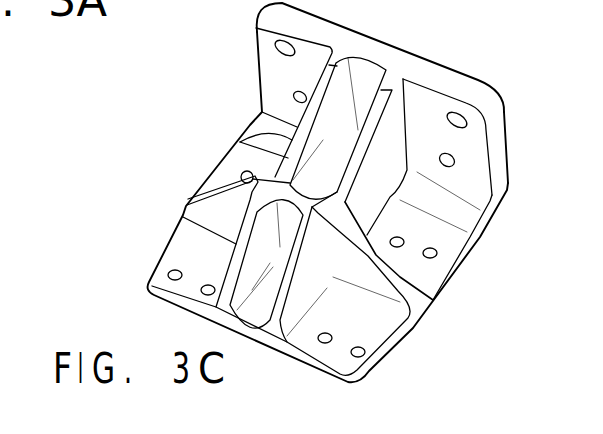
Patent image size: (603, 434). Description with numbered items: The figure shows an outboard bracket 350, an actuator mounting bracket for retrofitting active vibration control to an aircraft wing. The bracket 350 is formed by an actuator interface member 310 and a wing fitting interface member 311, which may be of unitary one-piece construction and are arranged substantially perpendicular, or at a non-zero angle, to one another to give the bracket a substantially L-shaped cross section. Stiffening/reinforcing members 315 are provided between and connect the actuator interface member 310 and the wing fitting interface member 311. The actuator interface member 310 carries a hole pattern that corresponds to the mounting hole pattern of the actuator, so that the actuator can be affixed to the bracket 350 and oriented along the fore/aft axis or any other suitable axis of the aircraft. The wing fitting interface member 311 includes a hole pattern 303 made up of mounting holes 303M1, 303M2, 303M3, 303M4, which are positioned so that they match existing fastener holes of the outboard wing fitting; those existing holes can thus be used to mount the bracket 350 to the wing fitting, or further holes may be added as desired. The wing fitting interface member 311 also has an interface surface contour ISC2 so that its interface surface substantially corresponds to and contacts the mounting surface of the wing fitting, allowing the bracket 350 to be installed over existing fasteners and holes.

The outboard bracket 350 is at (130, 289).
The hole pattern 303 is at (484, 192).
The mounting hole 303M1 is at (276, 46).
The mounting hole 303M2 is at (296, 98).
The mounting hole 303M3 is at (467, 127).
The mounting hole 303M4 is at (449, 167).
The wing fitting interface member 311 is at (418, 96).
The stiffening/reinforcing member 315 is at (243, 142).
The actuator interface member 310 is at (373, 318).
The interface surface contour ISC2 is at (506, 140).